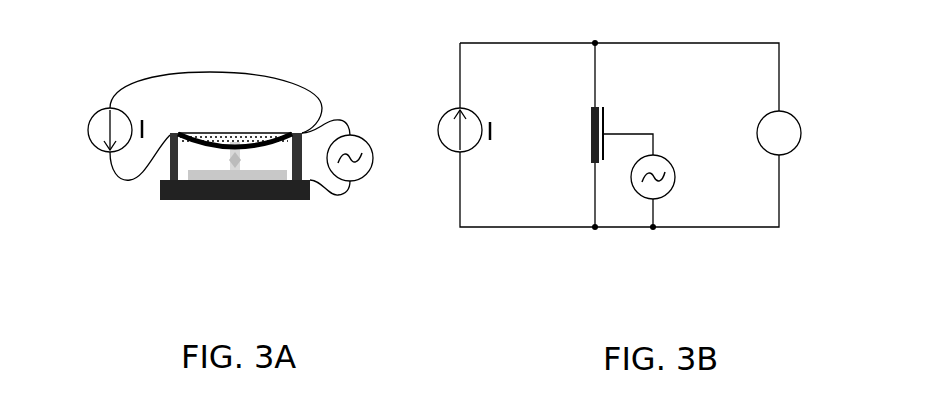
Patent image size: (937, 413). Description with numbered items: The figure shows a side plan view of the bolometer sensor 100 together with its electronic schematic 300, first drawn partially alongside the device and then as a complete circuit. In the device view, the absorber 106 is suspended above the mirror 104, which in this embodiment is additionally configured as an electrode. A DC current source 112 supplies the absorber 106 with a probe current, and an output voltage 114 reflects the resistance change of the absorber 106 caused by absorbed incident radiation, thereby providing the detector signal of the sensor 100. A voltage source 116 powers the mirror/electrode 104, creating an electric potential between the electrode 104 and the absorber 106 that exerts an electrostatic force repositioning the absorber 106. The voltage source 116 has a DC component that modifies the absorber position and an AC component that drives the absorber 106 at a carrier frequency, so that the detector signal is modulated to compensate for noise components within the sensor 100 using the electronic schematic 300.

In FIG. 3A, the semiconductor sensor 100 is at (243, 272).
In FIG. 3A, the mirror 104 is at (250, 175).
In FIG. 3B, the mirror 104 is at (606, 116).
In FIG. 3A, the absorber 106 is at (215, 145).
In FIG. 3B, the absorber 106 is at (585, 116).
In FIG. 3A, the DC current source 112 is at (105, 117).
In FIG. 3B, the DC current source 112 is at (445, 113).
In FIG. 3B, the output voltage 114 is at (781, 150).
In FIG. 3A, the voltage source 116 is at (362, 172).
In FIG. 3B, the voltage source 116 is at (668, 180).
In FIG. 3B, the electronic schematic 300 is at (628, 272).